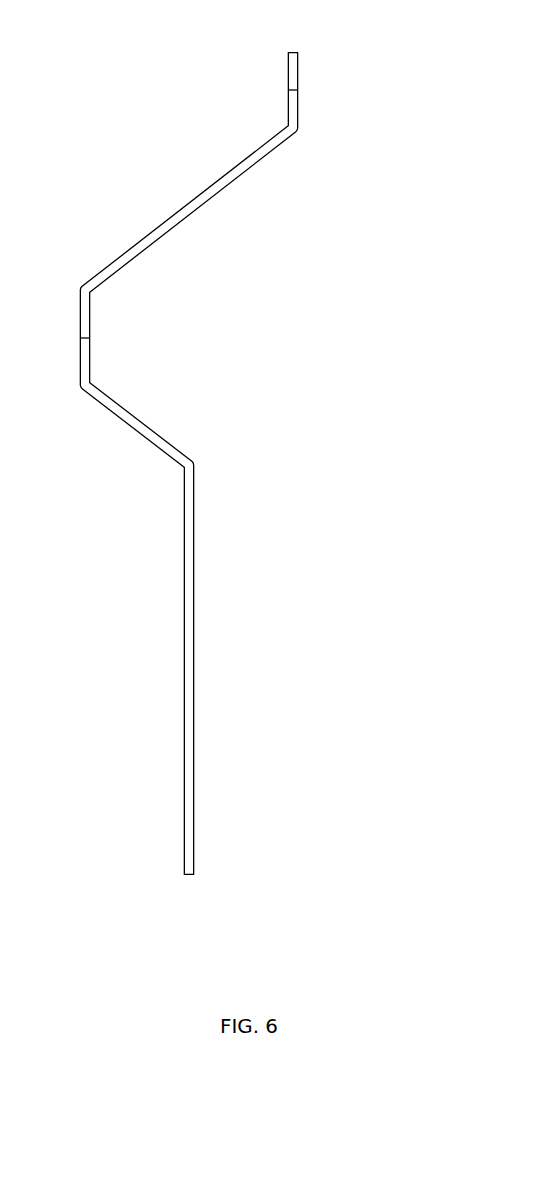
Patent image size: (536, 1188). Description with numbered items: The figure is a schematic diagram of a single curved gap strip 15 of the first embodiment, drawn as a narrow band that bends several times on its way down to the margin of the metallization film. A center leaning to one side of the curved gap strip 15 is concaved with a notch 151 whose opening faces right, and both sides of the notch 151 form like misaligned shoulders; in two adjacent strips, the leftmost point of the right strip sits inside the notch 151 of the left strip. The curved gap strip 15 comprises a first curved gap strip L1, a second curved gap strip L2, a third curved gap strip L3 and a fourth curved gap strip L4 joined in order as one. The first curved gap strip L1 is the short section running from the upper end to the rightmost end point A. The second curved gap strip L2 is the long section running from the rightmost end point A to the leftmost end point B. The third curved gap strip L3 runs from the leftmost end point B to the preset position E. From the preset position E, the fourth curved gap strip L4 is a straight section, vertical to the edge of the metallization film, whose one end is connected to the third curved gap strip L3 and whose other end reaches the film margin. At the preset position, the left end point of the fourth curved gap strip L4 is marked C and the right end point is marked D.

The curved gap strip 15 is at (250, 137).
The notch 151 is at (145, 335).
The first curved gap strip L1 is at (293, 63).
The second curved gap strip L2 is at (193, 205).
The third curved gap strip L3 is at (162, 438).
The fourth curved gap strip L4 is at (190, 592).
The rightmost end point A is at (302, 89).
The leftmost end point B is at (74, 338).
The left end point in the preset position C is at (174, 472).
The right end point in the preset position D is at (202, 472).
The preset position E is at (125, 472).